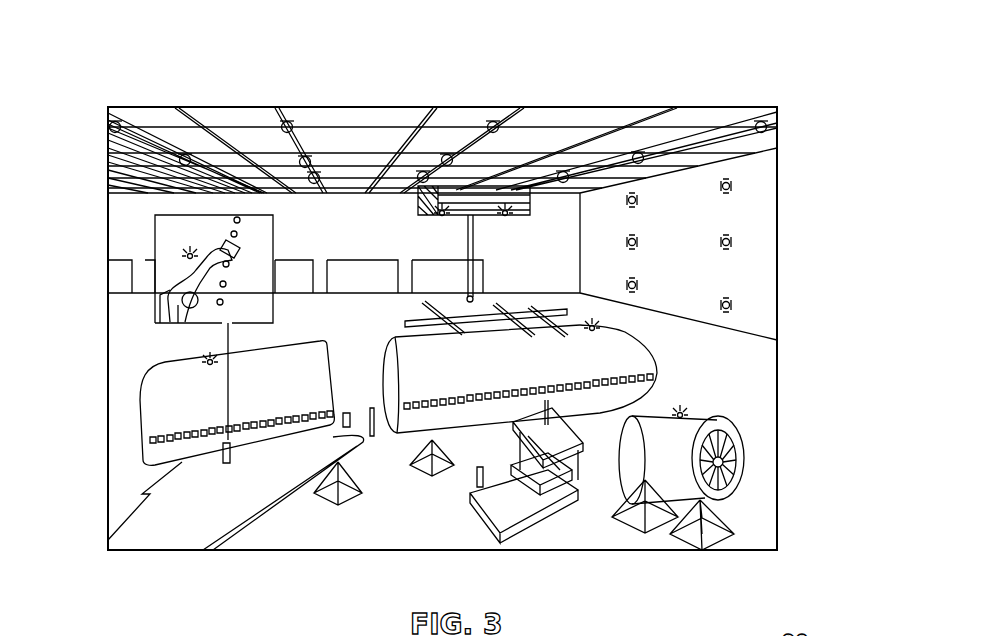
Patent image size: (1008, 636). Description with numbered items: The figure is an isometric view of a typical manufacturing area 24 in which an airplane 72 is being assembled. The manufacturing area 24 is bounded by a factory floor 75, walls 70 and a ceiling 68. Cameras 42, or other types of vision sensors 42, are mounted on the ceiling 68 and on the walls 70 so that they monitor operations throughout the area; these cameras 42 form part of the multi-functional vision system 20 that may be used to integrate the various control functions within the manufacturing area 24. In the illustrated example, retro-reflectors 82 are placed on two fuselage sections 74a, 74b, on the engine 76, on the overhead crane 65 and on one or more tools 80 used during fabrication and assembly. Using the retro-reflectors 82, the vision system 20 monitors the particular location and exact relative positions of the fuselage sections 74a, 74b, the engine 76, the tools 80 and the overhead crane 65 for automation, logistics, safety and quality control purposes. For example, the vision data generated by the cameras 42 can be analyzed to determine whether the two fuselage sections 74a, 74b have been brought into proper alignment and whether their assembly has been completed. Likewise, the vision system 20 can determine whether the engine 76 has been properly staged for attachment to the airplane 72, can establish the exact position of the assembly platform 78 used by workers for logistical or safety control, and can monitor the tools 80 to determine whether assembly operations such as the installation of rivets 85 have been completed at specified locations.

The vision system 20 is at (409, 97).
The manufacturing area 24 is at (790, 368).
The cameras 42 is at (180, 160).
The overhead crane 65 is at (507, 195).
The ceiling 68 is at (153, 120).
The walls 70 is at (752, 220).
The airplane 72 is at (684, 368).
The fuselage section 74a is at (405, 440).
The fuselage section 74b is at (185, 417).
The factory floor 75 is at (130, 478).
The engine 76 is at (672, 460).
The assembly platform 78 is at (522, 508).
The tools 80 is at (177, 282).
The retro-reflectors 82 is at (179, 242).
The rivets 85 is at (219, 242).